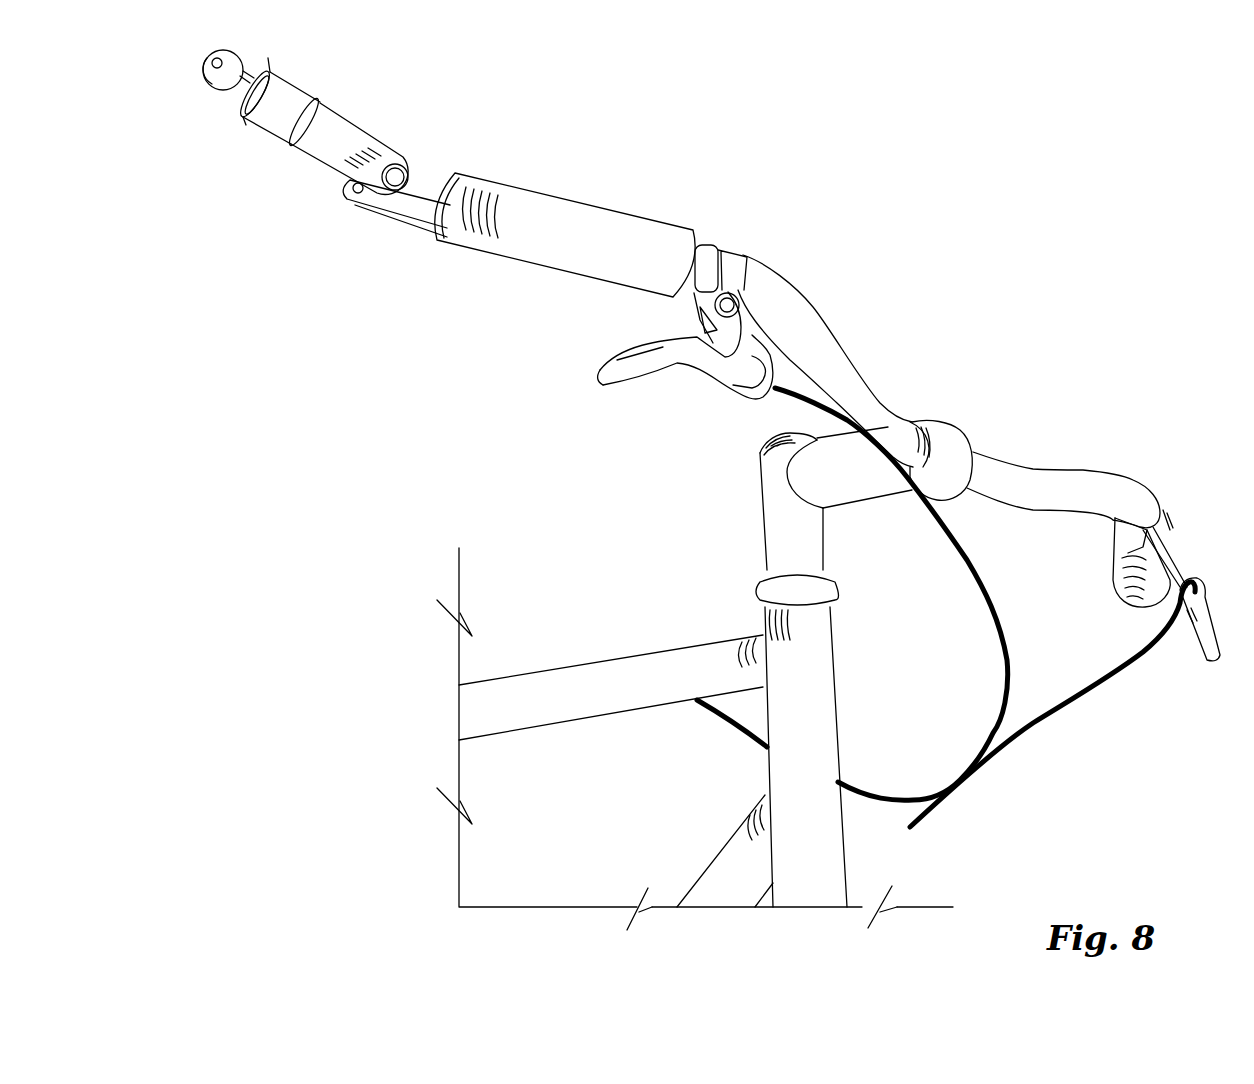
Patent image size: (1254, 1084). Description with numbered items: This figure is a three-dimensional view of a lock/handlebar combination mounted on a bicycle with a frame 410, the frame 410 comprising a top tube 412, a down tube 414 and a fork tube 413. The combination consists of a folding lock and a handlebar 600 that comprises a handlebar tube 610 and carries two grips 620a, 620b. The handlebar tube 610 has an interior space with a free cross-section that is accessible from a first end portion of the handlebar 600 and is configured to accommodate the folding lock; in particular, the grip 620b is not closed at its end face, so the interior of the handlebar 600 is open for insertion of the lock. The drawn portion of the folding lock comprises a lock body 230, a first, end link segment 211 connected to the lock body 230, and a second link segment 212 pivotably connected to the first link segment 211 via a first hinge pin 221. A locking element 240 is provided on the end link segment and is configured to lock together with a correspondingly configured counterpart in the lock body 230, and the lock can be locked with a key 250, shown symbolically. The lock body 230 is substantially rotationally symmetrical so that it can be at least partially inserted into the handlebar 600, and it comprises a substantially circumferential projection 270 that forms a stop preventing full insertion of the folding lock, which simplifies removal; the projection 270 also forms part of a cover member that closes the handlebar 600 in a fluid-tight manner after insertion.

The first link segment 211 is at (333, 133).
The second link segment 212 is at (427, 180).
The first hinge pin 221 is at (405, 167).
The lock body 230 is at (277, 115).
The locking element 240 is at (347, 182).
The key 250 is at (200, 70).
The circumferential projection 270 is at (268, 62).
The frame 410 is at (584, 592).
The top tube 412 is at (570, 703).
The fork tube 413 is at (813, 720).
The down tube 414 is at (720, 863).
The handlebar 600 is at (903, 360).
The handlebar tube 610 is at (800, 313).
The grip 620a is at (1120, 603).
The grip 620b is at (648, 218).